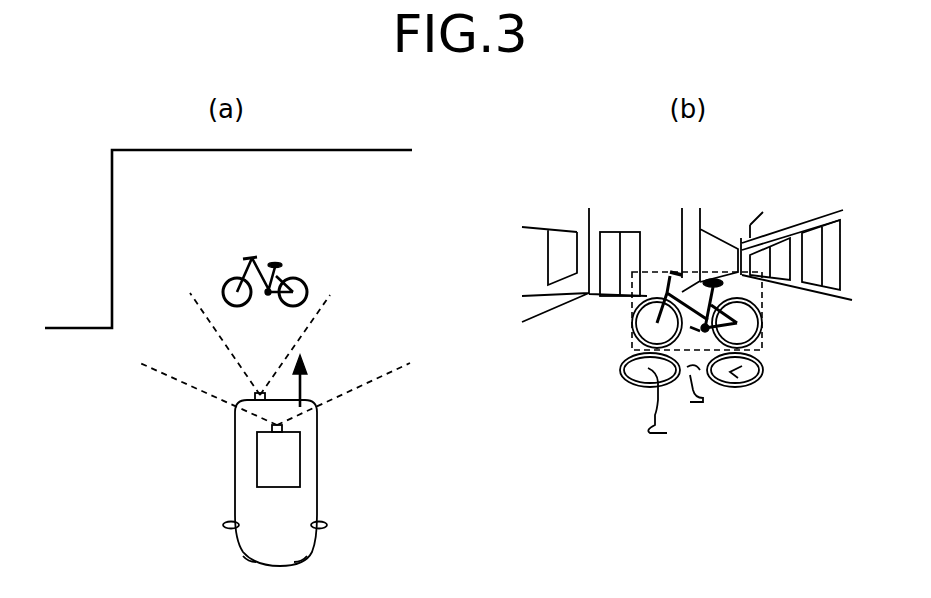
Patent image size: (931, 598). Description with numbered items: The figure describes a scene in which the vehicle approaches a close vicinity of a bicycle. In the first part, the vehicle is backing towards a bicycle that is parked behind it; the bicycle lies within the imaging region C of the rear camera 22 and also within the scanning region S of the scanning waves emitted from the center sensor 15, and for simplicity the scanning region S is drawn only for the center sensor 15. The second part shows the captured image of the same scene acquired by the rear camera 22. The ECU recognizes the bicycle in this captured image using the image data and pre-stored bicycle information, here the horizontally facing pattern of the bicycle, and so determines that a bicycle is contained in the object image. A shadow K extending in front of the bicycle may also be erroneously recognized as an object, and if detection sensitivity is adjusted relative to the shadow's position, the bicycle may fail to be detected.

The scanning region S is at (313, 316).
The center sensor 15 is at (255, 394).
The rear camera 22 is at (272, 428).
The imaging region C is at (378, 380).
The shadow K is at (753, 388).